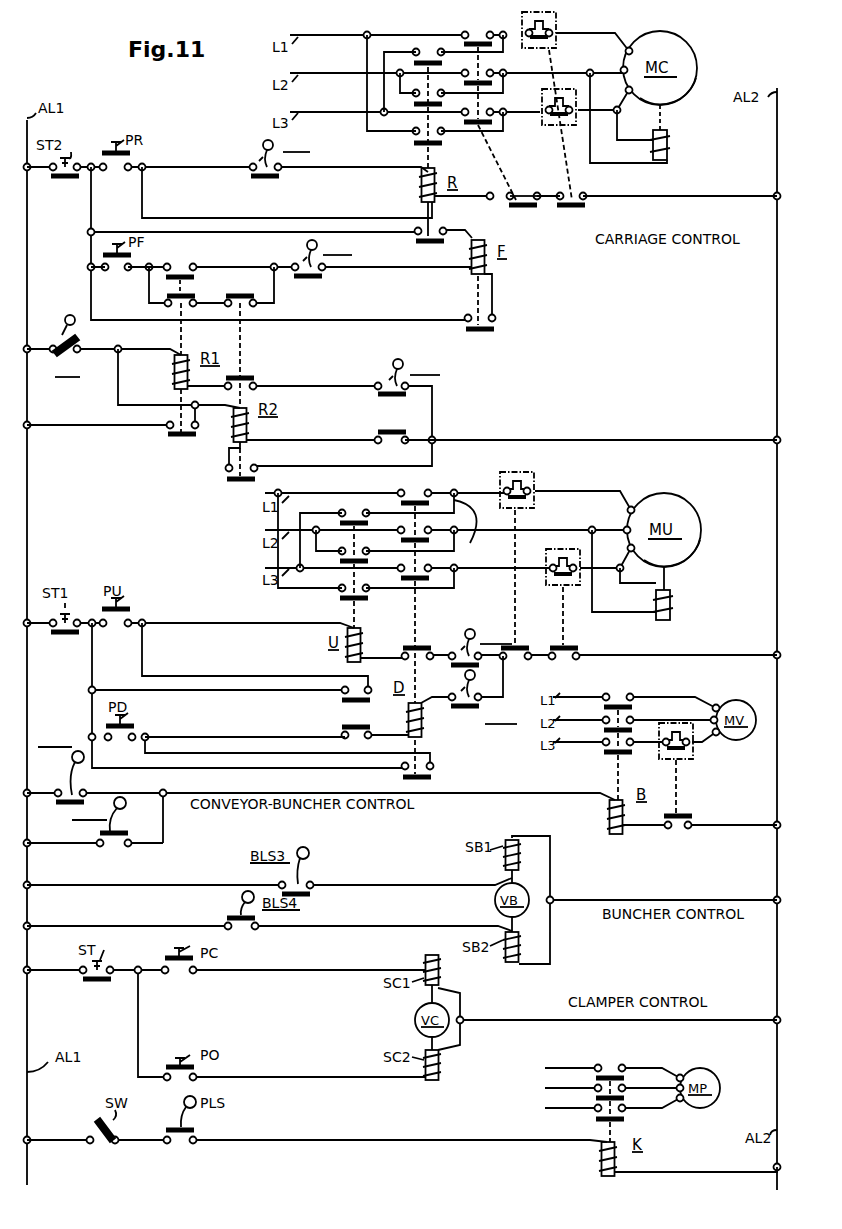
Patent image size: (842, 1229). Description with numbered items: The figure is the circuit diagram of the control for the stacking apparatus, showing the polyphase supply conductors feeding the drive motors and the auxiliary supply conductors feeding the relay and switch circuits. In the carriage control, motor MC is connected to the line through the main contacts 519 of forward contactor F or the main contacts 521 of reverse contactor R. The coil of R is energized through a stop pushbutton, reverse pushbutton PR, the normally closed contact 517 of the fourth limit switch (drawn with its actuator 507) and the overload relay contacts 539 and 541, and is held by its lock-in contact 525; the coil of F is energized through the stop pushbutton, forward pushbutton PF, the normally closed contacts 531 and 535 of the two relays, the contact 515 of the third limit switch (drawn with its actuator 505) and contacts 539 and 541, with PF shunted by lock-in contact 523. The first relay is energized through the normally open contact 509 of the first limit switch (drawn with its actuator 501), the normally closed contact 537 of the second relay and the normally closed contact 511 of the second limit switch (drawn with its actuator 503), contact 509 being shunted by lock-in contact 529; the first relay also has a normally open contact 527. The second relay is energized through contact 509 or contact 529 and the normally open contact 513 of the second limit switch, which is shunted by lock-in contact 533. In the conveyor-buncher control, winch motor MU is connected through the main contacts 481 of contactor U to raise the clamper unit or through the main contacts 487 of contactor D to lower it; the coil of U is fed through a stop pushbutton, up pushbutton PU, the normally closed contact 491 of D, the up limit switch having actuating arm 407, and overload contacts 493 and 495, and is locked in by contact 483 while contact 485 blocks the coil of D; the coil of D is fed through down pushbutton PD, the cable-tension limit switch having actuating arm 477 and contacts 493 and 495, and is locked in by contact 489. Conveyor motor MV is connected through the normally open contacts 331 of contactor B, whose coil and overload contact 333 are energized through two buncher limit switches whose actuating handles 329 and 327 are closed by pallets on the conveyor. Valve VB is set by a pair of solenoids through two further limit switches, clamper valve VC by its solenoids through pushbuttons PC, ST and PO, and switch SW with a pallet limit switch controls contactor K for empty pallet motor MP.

The main contacts of contactor R 521 is at (428, 48).
The main contacts of contactor F 519 is at (478, 40).
The limit switch LS4 actuator 507 is at (266, 152).
The normally closed contact of limit switch LS4 517 is at (268, 178).
The overload relay contact 539 is at (532, 208).
The overload relay contact 541 is at (580, 208).
The lock-in contact of contactor R 525 is at (422, 246).
The lock-in contact of contactor F 523 is at (494, 330).
The normally open contact of relay R1 527 is at (178, 272).
The normally closed contact of limit switch LS3 515 is at (316, 278).
The limit switch LS3 actuator 505 is at (309, 254).
The normally closed contact of relay R1 531 is at (166, 300).
The normally closed contact of relay R2 535 is at (258, 283).
The normally open contact of limit switch LS1 509 is at (80, 340).
The limit switch LS1 actuator 501 is at (65, 322).
The normally closed contact of relay R2 537 is at (246, 380).
The lock-in contact of relay R1 529 is at (172, 432).
The normally closed contact of limit switch LS2 511 is at (380, 392).
The limit switch LS2 actuator 503 is at (395, 368).
The normally open contact of limit switch LS2 513 is at (378, 440).
The lock-in contact of relay R2 533 is at (236, 478).
The main contacts of contactor U 481 is at (348, 590).
The main contacts of contactor D 487 is at (448, 564).
The normally closed auxiliary contact of contactor D 491 is at (408, 645).
The actuating arm of limit switch ULS 407 is at (466, 642).
The overload contact 493 is at (524, 585).
The overload contact 495 is at (562, 650).
The actuating arm of limit switch DLS 477 is at (467, 680).
The normally open auxiliary contact of contactor U 483 is at (342, 702).
The normally closed auxiliary contact of contactor U 485 is at (342, 734).
The normally open auxiliary contact of contactor D 489 is at (432, 778).
The normally open contacts of contactor B 331 is at (604, 748).
The overload contact 333 is at (688, 820).
The actuating handle of limit switch BLS1 329 is at (73, 763).
The actuating handle of limit switch BLS2 327 is at (121, 812).